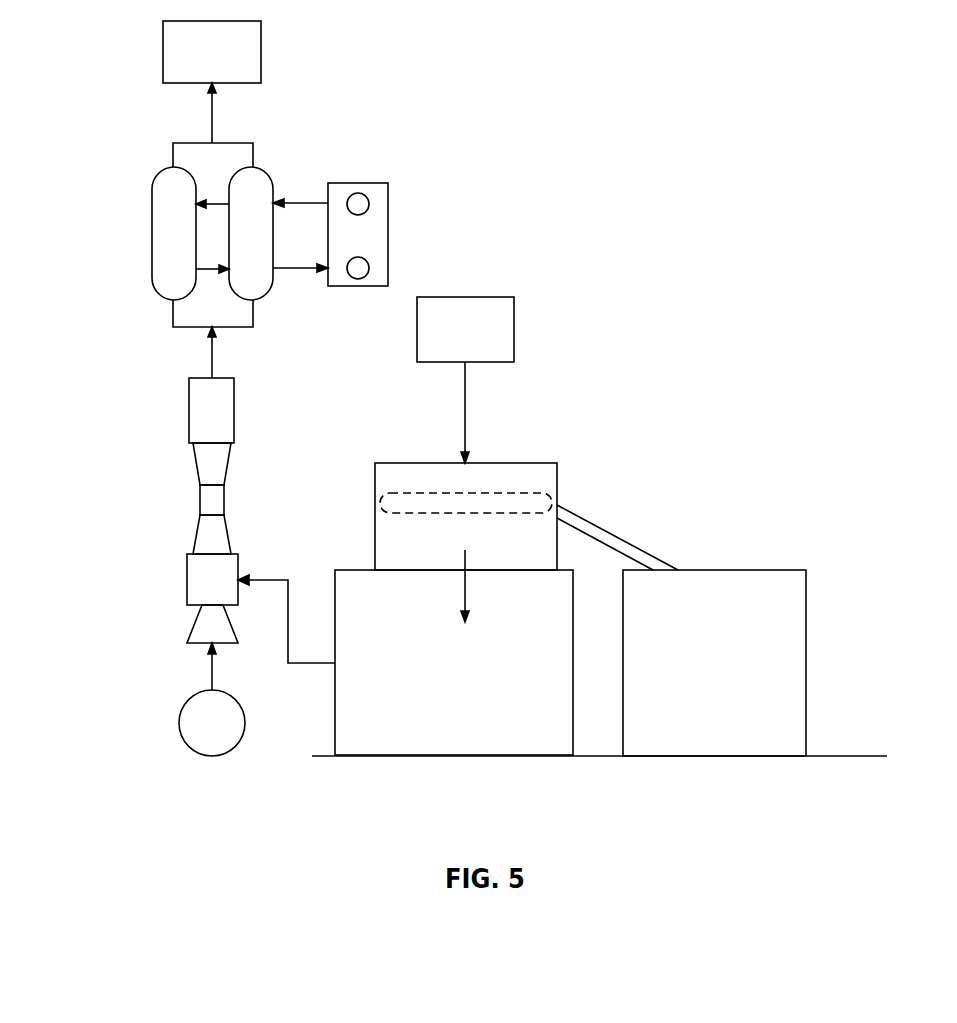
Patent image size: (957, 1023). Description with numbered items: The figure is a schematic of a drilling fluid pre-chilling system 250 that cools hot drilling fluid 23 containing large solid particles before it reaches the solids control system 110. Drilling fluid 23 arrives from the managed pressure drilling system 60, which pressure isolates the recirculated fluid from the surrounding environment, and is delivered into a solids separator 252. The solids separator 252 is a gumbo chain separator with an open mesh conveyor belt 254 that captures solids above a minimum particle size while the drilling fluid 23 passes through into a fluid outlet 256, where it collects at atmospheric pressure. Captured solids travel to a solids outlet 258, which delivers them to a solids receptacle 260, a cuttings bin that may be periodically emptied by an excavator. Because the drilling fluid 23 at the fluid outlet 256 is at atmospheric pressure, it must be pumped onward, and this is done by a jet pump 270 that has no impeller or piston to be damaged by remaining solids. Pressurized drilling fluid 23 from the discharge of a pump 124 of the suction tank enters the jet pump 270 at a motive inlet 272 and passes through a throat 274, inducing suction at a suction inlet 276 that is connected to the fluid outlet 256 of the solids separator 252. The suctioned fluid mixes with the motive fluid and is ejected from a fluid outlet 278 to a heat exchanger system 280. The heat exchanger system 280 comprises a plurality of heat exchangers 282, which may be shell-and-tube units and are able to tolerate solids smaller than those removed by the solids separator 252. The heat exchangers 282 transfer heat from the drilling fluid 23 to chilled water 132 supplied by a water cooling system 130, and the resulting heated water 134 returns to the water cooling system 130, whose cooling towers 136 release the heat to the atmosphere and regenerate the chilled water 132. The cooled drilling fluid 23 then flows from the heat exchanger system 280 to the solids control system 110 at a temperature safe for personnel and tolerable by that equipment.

The solids control system 110 is at (262, 55).
The drilling fluid 23 is at (210, 680).
The managed pressure drilling (MPD) system 60 is at (480, 346).
The pump 124 is at (233, 737).
The water cooling system 130 is at (396, 225).
The chilled water 132 is at (308, 200).
The heated water 134 is at (292, 272).
The cooling towers 136 is at (369, 265).
The drilling fluid pre-chilling system 250 is at (126, 385).
The solids separator 252 is at (450, 473).
The open mesh conveyor belt 254 is at (392, 493).
The fluid outlet 256 is at (527, 740).
The solids outlet 258 is at (605, 530).
The solids receptacle 260 is at (806, 655).
The jet pump 270 is at (206, 553).
The motive inlet 272 is at (196, 622).
The throat 274 is at (205, 493).
The suction inlet 276 is at (248, 572).
The fluid outlet 278 is at (222, 374).
The heat exchanger system 280 is at (170, 213).
The heat exchangers 282 is at (165, 192).